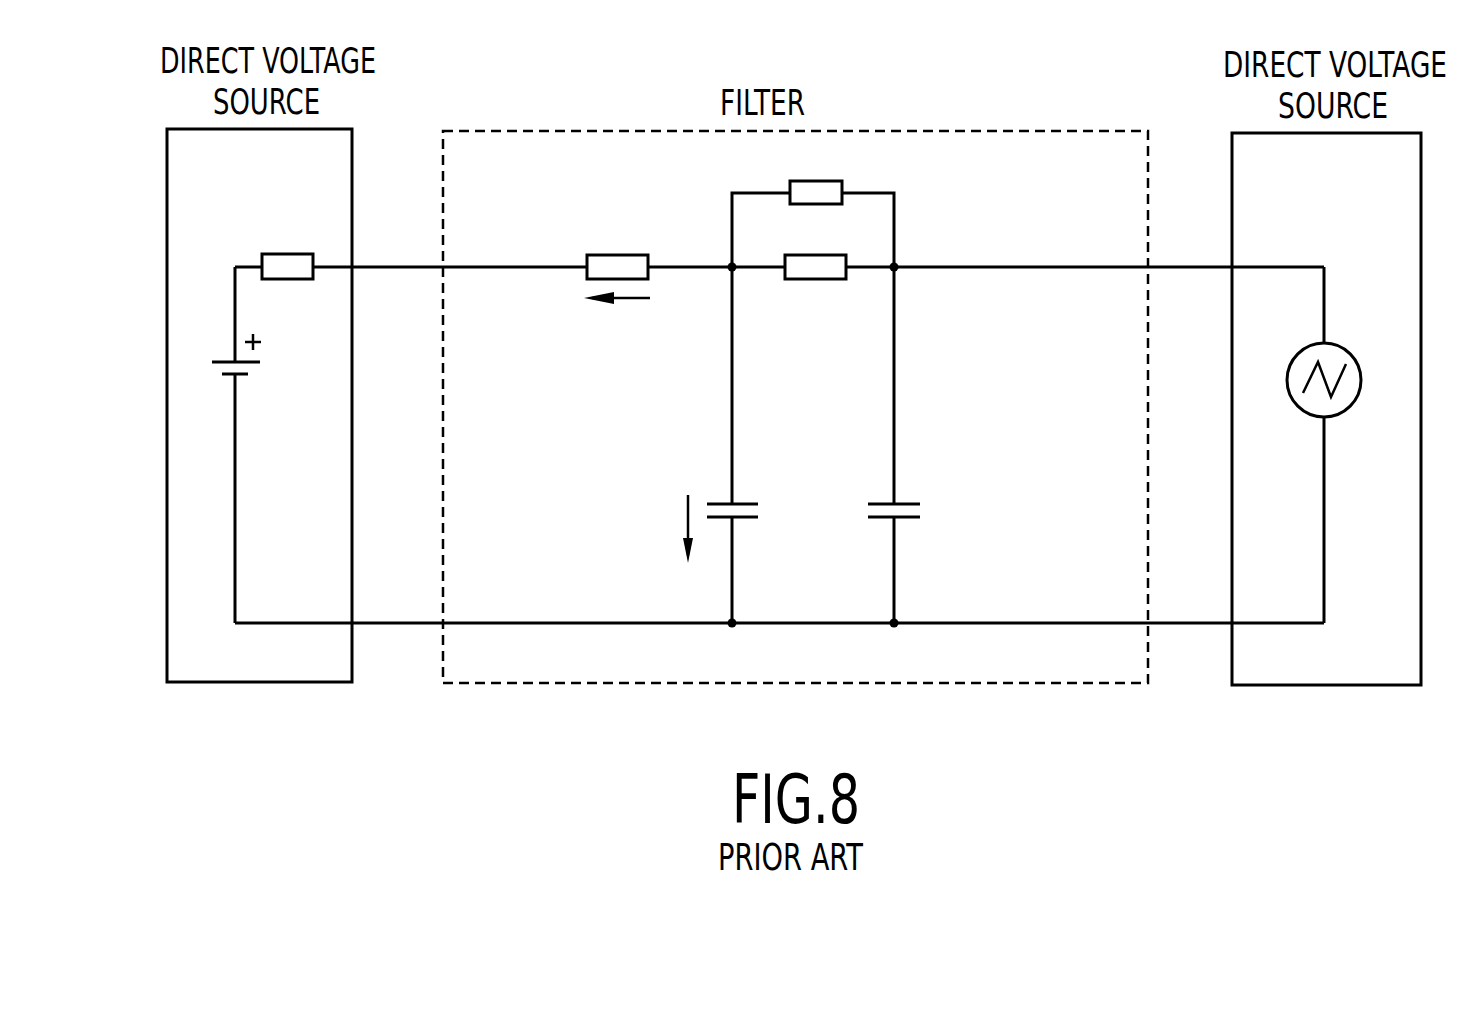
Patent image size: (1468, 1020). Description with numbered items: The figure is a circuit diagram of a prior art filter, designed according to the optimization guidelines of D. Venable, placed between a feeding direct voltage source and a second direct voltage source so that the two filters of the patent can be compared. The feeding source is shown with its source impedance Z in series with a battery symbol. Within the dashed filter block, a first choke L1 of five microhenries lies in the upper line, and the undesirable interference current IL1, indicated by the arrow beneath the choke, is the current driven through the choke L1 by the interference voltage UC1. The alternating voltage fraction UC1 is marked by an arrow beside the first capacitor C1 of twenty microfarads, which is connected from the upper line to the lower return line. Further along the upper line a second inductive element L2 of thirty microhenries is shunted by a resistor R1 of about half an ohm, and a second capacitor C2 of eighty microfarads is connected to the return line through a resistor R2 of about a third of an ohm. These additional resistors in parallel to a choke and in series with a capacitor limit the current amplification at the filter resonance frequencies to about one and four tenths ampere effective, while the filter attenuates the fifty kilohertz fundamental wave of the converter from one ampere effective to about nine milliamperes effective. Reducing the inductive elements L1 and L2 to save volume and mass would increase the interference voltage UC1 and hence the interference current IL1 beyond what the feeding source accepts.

The source impedance Z is at (287, 242).
The choke L1 is at (621, 243).
The interference current IL1 is at (617, 321).
The resistor R1 is at (818, 171).
The inductive element L2 is at (813, 243).
The resistor R2 is at (930, 385).
The capacitor C1 is at (760, 552).
The interference voltage UC1 is at (657, 529).
The capacitor C2 is at (920, 552).